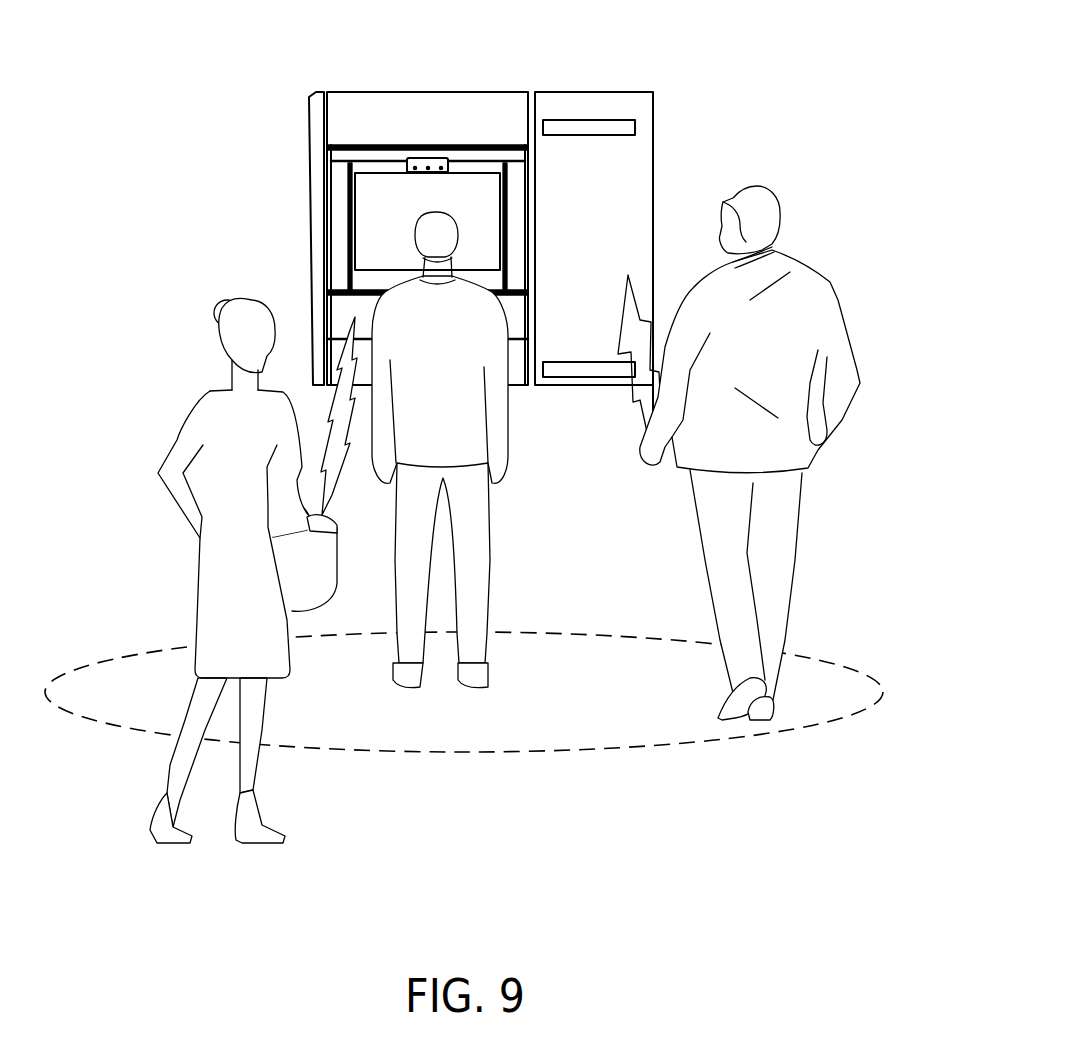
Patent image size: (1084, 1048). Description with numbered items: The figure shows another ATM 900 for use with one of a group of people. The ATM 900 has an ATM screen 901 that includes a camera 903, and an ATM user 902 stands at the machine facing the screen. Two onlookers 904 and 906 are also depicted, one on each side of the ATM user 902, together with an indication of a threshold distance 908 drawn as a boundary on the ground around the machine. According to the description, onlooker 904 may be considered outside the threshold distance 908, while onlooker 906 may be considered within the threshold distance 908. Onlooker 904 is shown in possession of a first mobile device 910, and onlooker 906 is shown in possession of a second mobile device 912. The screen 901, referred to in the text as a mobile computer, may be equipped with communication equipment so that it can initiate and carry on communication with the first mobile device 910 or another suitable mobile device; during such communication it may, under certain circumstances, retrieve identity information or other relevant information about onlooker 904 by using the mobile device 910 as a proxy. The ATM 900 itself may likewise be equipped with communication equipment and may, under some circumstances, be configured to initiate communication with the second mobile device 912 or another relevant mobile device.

The ATM 900 is at (150, 42).
The ATM screen 901 is at (512, 92).
The ATM user 902 is at (490, 496).
The camera 903 is at (428, 157).
The onlooker 904 is at (207, 398).
The onlooker 906 is at (837, 307).
The threshold distance 908 is at (870, 675).
The first mobile device 910 is at (337, 533).
The second mobile device 912 is at (653, 482).